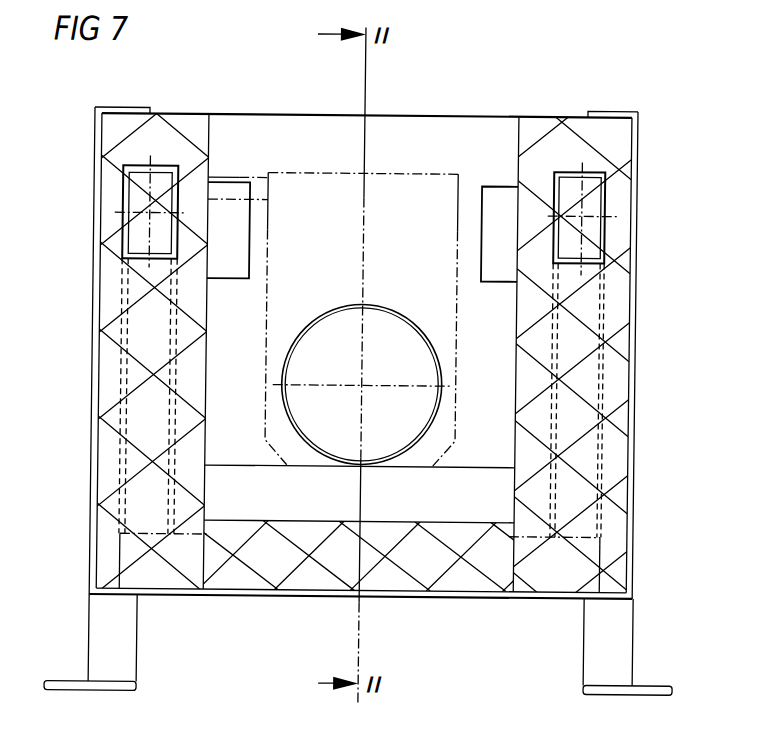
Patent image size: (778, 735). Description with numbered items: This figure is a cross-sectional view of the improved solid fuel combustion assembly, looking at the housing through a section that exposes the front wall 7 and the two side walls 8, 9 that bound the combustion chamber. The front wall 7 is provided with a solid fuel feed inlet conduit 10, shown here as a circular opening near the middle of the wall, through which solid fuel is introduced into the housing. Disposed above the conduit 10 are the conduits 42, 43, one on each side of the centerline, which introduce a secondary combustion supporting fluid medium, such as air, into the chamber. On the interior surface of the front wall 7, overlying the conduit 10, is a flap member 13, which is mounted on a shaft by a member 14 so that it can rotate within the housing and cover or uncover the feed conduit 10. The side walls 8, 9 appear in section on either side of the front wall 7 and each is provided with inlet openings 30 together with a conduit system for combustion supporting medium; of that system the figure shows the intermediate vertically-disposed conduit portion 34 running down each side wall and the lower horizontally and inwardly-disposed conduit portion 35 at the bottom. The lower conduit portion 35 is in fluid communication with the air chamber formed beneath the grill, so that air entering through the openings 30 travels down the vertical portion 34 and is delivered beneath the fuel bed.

The front wall 7 is at (466, 129).
The side wall 8 is at (634, 447).
The side wall 9 is at (101, 458).
The solid fuel feed inlet conduit 10 is at (327, 420).
The flap member 13 is at (393, 205).
The member 14 is at (310, 176).
The inlet openings 30 is at (139, 203).
The intermediate vertically-disposed conduit portion 34 is at (148, 343).
The lower horizontally and inwardly-disposed conduit portion 35 is at (543, 569).
The conduit 42 is at (498, 194).
The conduit 43 is at (227, 189).